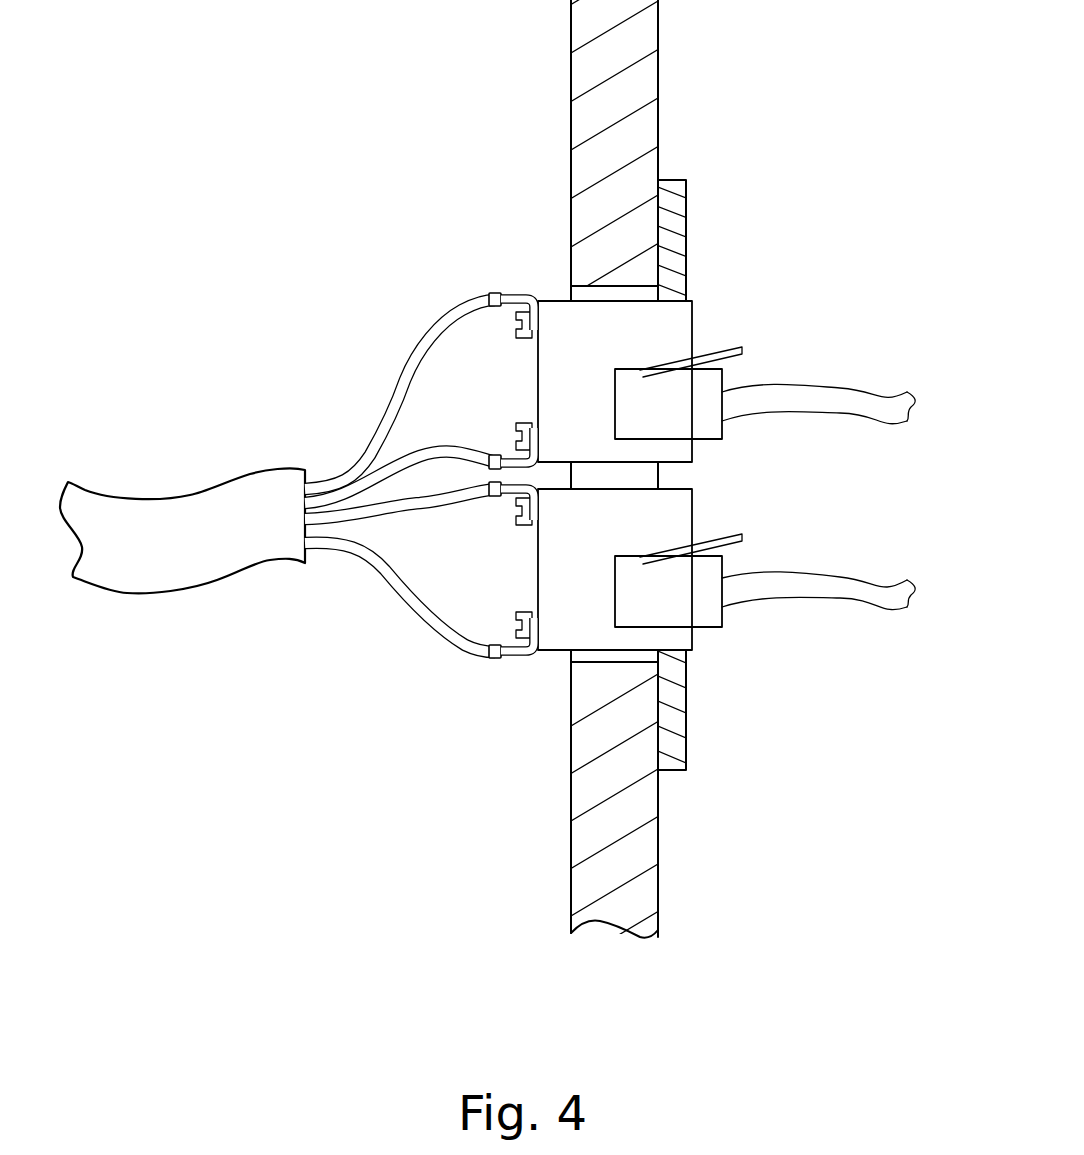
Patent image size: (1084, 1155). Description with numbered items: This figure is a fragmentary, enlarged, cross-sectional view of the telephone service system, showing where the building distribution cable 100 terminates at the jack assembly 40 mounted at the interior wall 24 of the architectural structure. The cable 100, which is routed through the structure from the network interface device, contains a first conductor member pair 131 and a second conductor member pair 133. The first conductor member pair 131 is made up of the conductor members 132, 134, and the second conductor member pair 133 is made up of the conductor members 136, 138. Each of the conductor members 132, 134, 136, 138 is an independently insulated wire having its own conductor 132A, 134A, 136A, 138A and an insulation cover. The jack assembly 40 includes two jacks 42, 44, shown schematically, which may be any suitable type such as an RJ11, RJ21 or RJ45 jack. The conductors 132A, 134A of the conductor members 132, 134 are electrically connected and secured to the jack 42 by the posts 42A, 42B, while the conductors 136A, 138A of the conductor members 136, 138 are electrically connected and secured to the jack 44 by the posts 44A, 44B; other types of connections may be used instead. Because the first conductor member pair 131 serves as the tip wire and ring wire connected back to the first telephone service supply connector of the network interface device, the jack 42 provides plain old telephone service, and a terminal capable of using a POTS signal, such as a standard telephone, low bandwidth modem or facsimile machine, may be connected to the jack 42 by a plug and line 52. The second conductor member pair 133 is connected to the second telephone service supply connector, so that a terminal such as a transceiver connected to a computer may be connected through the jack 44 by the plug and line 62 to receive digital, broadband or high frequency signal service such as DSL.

The interior wall 24 is at (645, 88).
The jack assembly 40 is at (709, 485).
The jack 44 is at (630, 338).
The post 44A is at (526, 415).
The post 44B is at (545, 307).
The jack 42 is at (643, 630).
The post 42A is at (543, 653).
The post 42B is at (537, 517).
The upper plug with cable 62 is at (707, 413).
The plug and line 52 is at (710, 571).
The cable 100 is at (200, 507).
The second conductor member pair 133 is at (432, 322).
The first conductor member pair 131 is at (424, 674).
The conductor member 138 is at (419, 315).
The conductor 138A is at (503, 292).
The conductor member 136 is at (456, 451).
The conductor 136A is at (527, 473).
The conductor member 134 is at (456, 537).
The conductor 134A is at (530, 490).
The conductor member 132 is at (419, 705).
The conductor 132A is at (515, 660).